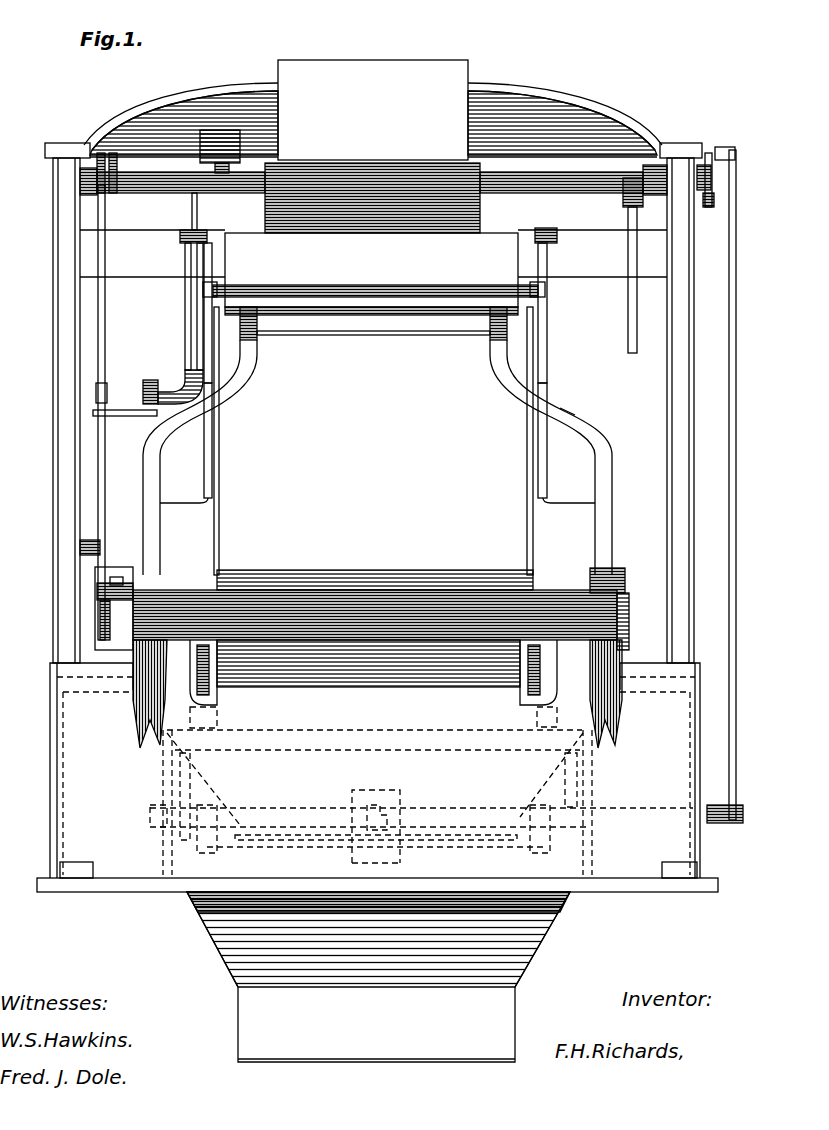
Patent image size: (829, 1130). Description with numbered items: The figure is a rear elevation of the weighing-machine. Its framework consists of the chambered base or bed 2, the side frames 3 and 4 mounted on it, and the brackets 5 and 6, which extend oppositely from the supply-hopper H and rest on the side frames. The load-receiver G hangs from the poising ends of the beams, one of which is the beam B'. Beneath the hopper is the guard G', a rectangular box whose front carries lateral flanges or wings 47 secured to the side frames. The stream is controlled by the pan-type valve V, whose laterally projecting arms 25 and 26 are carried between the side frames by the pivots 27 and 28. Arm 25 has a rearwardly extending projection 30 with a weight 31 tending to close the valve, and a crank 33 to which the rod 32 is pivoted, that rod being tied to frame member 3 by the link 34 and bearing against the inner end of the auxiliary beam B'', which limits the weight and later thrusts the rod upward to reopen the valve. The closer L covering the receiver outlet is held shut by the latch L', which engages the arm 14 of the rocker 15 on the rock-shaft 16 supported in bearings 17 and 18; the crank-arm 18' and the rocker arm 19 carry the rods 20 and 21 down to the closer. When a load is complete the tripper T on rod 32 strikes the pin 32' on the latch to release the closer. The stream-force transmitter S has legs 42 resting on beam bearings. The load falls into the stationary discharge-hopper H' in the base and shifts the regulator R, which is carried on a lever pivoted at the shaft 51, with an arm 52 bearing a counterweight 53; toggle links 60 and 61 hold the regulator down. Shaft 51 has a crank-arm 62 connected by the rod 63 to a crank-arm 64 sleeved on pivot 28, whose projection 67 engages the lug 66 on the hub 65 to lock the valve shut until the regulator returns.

The chambered base or bed 2 is at (72, 737).
The side frame 3 is at (60, 348).
The side frame 4 is at (687, 380).
The bracket 5 is at (170, 97).
The bracket 6 is at (542, 91).
The arm of the rocker 14 is at (172, 370).
The rocker 15 is at (190, 312).
The rock-shaft 16 is at (360, 285).
The bearing 17 is at (212, 313).
The bearing 18 is at (563, 313).
The crank-arm 18' is at (569, 229).
The arm of the rocker 19 is at (193, 254).
The rod 20 is at (547, 371).
The rod 21 is at (212, 436).
The arm of the valve 25 is at (245, 196).
The arm of the valve 26 is at (563, 184).
The pivot 27 is at (78, 192).
The pivot 28 is at (653, 167).
The rearwardly-extending projection 30 is at (233, 172).
The weight 31 is at (220, 133).
The rod 32 is at (116, 412).
The pin 32' is at (86, 416).
The crank 33 is at (115, 172).
The link 34 is at (78, 538).
The legs 42 is at (147, 444).
The lateral flanges or wings 47 is at (125, 238).
The pivot or shaft 51 is at (648, 808).
The arm of the carrier or lever 52 is at (377, 805).
The counterweight 53 is at (400, 861).
The links 60 is at (205, 853).
The links 61 is at (190, 783).
The crank-arm 62 is at (723, 824).
The rod 63 is at (729, 683).
The crank-arm 64 is at (732, 172).
The hub or sleeve 65 is at (707, 207).
The projection or lug 66 is at (720, 147).
The projection 67 is at (708, 153).
The supply-hopper H is at (373, 110).
The valve V is at (480, 207).
The guard G' is at (371, 274).
The load-receiver G is at (373, 441).
The closer or discharge valve L is at (373, 684).
The latch L' is at (136, 382).
The tripper T is at (96, 395).
The stream-force transmitter S is at (580, 399).
The beam B' is at (333, 580).
The auxiliary beam B'' is at (78, 608).
The discharge-hopper H' is at (377, 789).
The regulator R is at (315, 841).